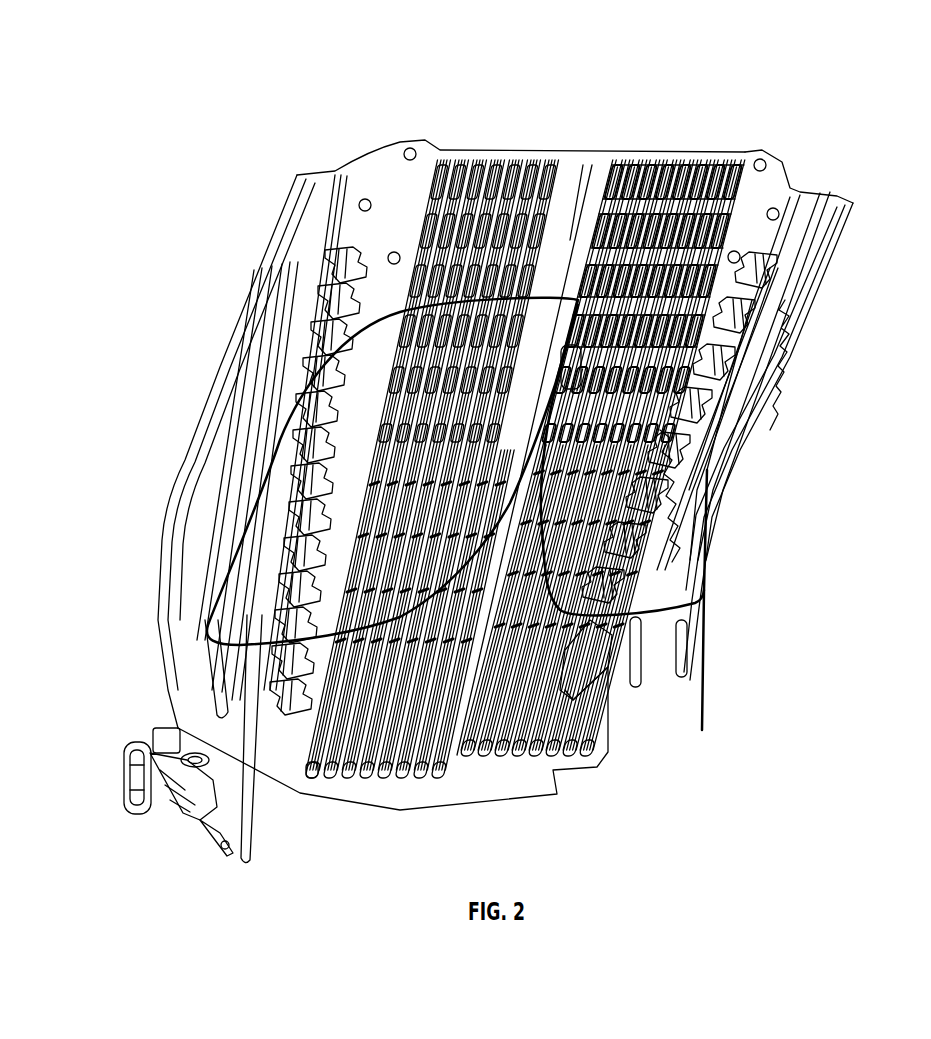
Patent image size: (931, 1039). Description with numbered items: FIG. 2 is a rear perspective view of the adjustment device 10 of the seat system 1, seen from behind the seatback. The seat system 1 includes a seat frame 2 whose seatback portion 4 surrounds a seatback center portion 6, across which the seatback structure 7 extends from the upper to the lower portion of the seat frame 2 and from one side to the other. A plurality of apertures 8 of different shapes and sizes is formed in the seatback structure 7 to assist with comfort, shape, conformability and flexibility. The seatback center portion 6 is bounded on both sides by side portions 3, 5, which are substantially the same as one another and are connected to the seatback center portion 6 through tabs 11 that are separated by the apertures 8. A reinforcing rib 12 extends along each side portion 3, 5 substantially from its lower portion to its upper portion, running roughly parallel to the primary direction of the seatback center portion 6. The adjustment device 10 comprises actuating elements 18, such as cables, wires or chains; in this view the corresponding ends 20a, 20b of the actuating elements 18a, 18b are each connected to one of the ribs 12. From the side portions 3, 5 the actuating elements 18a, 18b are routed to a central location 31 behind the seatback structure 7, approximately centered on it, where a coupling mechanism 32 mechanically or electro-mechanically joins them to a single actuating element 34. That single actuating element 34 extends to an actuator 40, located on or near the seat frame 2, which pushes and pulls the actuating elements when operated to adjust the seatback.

The seat system 1 is at (280, 105).
The seat frame 2 is at (198, 646).
The side portion 3 is at (232, 430).
The seatback portion 4 is at (832, 260).
The side portion 5 is at (747, 447).
The seatback center portion 6 is at (571, 262).
The seatback structure 7 is at (611, 713).
The apertures 8 is at (733, 187).
The adjustment device 10 is at (396, 642).
The tabs 11 is at (300, 492).
The reinforcing rib 12 is at (262, 518).
The actuating element 18 is at (522, 765).
The actuating element 18a is at (307, 625).
The actuating element 18b is at (635, 660).
The end of actuating element 20a is at (287, 586).
The end of actuating element 20b is at (702, 572).
The central location 31 is at (548, 295).
The coupling mechanism 32 is at (578, 295).
The single actuating element 34 is at (403, 318).
The actuator 40 is at (133, 818).